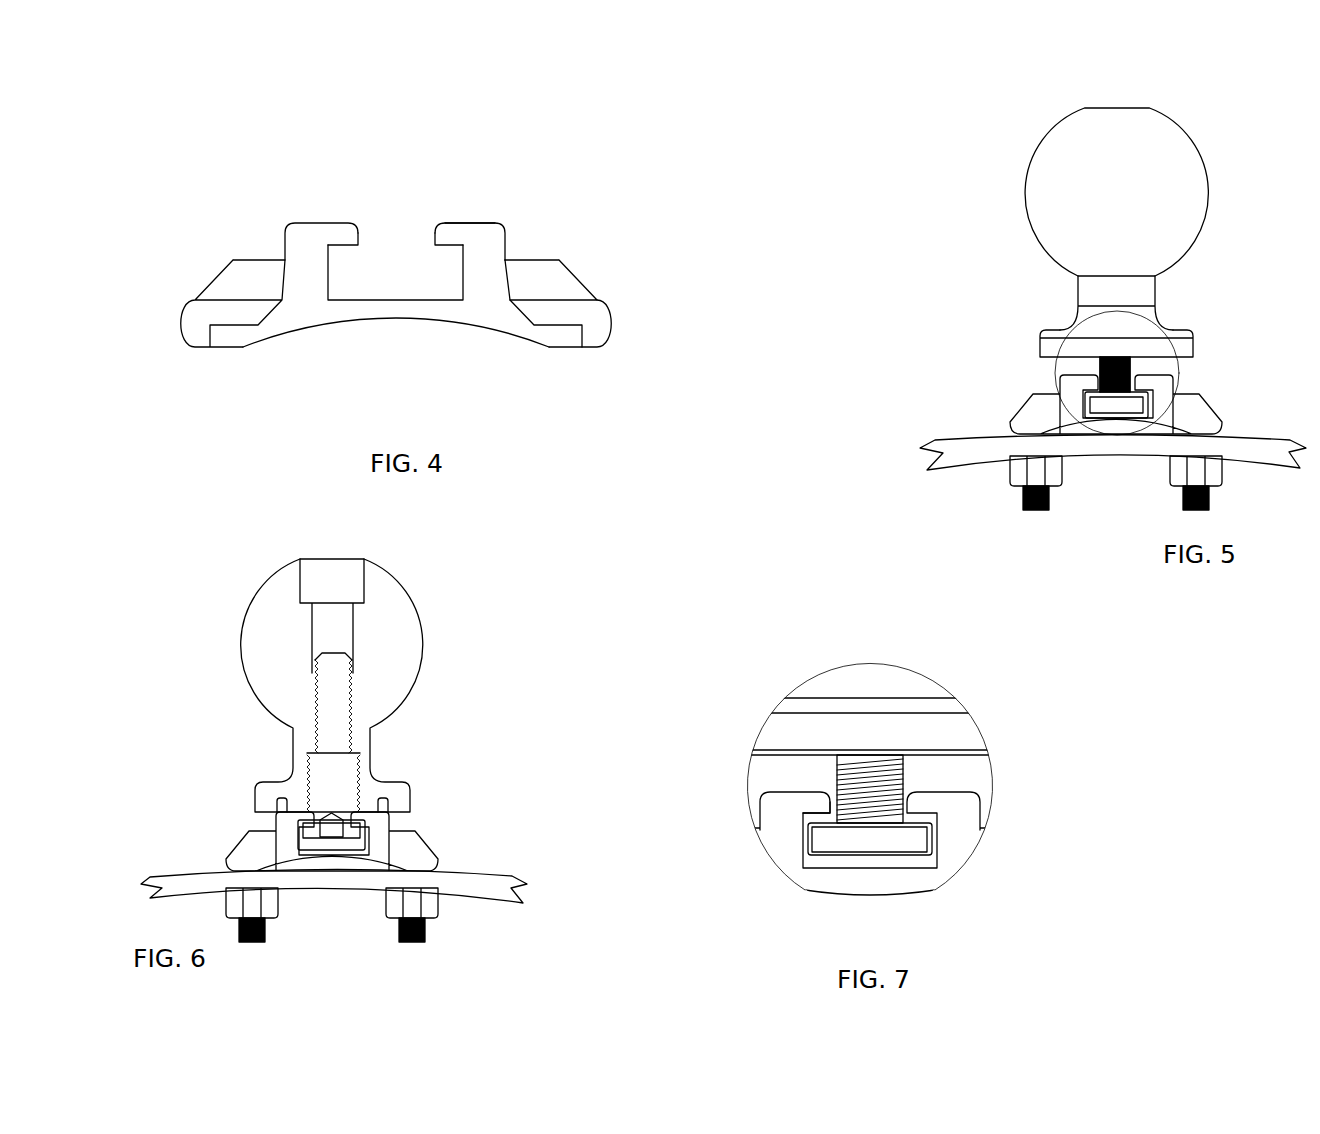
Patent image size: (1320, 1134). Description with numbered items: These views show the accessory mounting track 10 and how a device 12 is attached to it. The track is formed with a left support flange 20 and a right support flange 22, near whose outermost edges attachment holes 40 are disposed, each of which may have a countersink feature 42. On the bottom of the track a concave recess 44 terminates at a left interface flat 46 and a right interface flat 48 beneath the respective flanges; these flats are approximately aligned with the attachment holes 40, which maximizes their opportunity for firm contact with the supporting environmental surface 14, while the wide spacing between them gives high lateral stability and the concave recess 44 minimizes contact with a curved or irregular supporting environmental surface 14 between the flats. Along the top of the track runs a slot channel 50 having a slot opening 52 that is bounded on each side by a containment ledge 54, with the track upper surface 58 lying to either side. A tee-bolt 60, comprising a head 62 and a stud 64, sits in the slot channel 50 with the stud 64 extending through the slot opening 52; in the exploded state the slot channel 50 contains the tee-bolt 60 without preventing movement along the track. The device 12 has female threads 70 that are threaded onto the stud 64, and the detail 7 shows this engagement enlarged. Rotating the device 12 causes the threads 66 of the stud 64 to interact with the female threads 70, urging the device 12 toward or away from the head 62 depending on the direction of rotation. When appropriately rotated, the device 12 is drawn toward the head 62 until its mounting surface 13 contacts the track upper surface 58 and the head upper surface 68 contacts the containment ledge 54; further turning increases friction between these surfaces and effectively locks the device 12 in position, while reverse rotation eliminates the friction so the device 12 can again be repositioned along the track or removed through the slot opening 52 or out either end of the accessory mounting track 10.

In FIG. 5, the detail 7 is at (1180, 372).
In FIG. 4, the accessory mounting track 10 is at (398, 275).
In FIG. 5, the accessory mounting track 10 is at (1037, 417).
In FIG. 6, the accessory mounting track 10 is at (332, 841).
In FIG. 5, the device 12 is at (1135, 152).
In FIG. 5, the mounting surface 13 is at (1043, 350).
In FIG. 5, the supporting environmental surface 14 is at (968, 447).
In FIG. 4, the left support flange 20 is at (303, 250).
In FIG. 4, the right support flange 22 is at (603, 335).
In FIG. 4, the attachment holes 40 is at (560, 343).
In FIG. 4, the countersink feature 42 is at (550, 303).
In FIG. 4, the concave recess 44 is at (285, 340).
In FIG. 4, the left interface flat 46 is at (216, 350).
In FIG. 4, the right interface flat 48 is at (582, 350).
In FIG. 4, the slot channel 50 is at (393, 270).
In FIG. 4, the slot opening 52 is at (388, 222).
In FIG. 4, the containment ledge 54 is at (458, 237).
In FIG. 7, the containment ledge 54 is at (818, 812).
In FIG. 4, the track upper surface 58 is at (450, 215).
In FIG. 5, the tee-bolt 60 is at (1133, 363).
In FIG. 5, the head 62 is at (1135, 400).
In FIG. 5, the stud 64 is at (1100, 366).
In FIG. 6, the stud 64 is at (333, 688).
In FIG. 6, the threads 66 is at (353, 683).
In FIG. 7, the head upper surface 68 is at (920, 823).
In FIG. 6, the female threads 70 is at (318, 820).